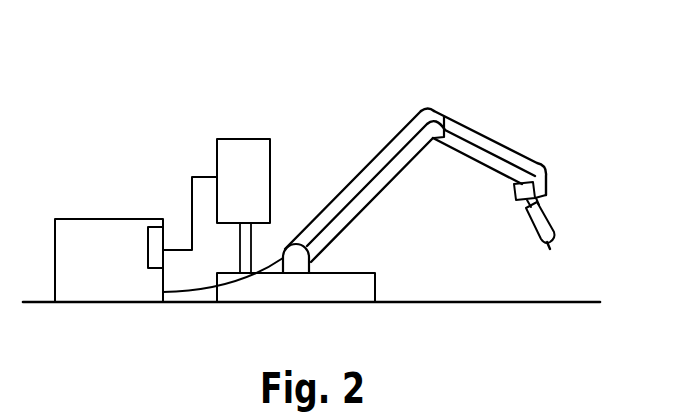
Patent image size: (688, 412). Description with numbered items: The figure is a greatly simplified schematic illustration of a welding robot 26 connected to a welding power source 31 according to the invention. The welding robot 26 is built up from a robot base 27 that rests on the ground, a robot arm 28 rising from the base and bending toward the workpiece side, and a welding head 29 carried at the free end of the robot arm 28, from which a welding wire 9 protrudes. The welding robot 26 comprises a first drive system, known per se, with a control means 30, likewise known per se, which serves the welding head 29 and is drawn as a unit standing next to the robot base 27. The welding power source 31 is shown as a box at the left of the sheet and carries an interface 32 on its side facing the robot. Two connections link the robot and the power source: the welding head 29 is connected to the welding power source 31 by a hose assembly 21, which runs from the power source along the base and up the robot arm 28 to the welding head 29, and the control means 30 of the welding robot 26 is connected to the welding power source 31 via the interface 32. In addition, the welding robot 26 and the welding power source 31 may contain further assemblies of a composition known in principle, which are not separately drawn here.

The welding wire 9 is at (553, 242).
The hose assembly 21 is at (365, 175).
The welding robot 26 is at (290, 85).
The robot base 27 is at (355, 287).
The robot arm 28 is at (430, 118).
The welding head 29 is at (548, 225).
The control means 30 is at (228, 145).
The welding power source 31 is at (70, 235).
The interface 32 is at (148, 230).